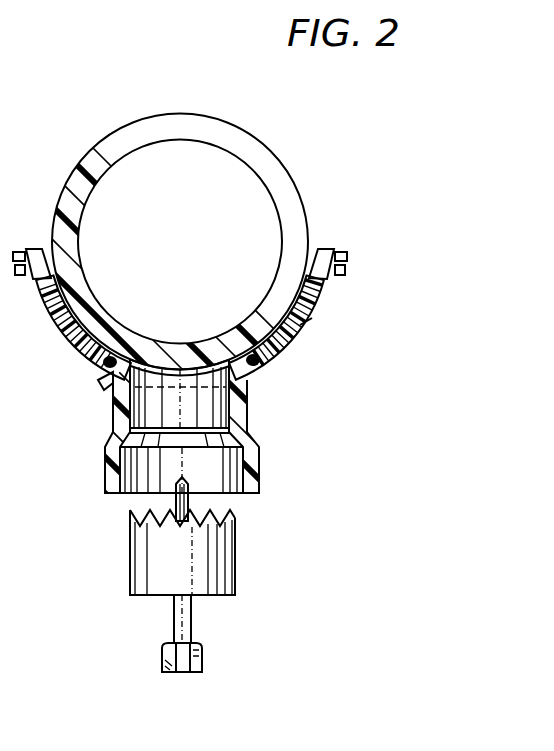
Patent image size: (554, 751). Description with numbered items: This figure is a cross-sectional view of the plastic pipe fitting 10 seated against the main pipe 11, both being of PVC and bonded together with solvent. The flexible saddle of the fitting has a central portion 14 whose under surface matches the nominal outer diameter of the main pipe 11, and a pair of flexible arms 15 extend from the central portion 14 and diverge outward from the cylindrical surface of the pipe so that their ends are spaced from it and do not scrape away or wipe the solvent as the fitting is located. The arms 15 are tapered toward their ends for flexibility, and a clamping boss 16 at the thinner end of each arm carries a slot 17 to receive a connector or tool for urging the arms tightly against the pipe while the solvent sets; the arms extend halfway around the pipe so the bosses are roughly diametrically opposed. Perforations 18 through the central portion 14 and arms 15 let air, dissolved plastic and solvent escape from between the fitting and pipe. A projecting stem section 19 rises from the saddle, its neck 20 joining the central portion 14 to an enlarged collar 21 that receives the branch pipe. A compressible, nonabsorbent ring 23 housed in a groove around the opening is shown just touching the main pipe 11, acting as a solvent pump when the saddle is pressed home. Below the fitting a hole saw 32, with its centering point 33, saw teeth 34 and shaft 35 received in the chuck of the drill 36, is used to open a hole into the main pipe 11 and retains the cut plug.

The pipe fitting 10 is at (222, 314).
The main pipe 11 is at (241, 136).
The central portion 14 is at (100, 379).
The flexible arms 15 is at (308, 298).
The clamping boss 16 is at (331, 250).
The slot 17 is at (360, 262).
The perforations 18 is at (296, 334).
The projecting stem section 19 is at (280, 441).
The neck 20 is at (250, 405).
The enlarged collar 21 is at (258, 468).
The compressible ring 23 is at (256, 358).
The hole saw 32 is at (175, 548).
The centering point 33 is at (191, 466).
The saw teeth 34 is at (208, 519).
The shaft 35 is at (190, 624).
The drill 36 is at (148, 662).